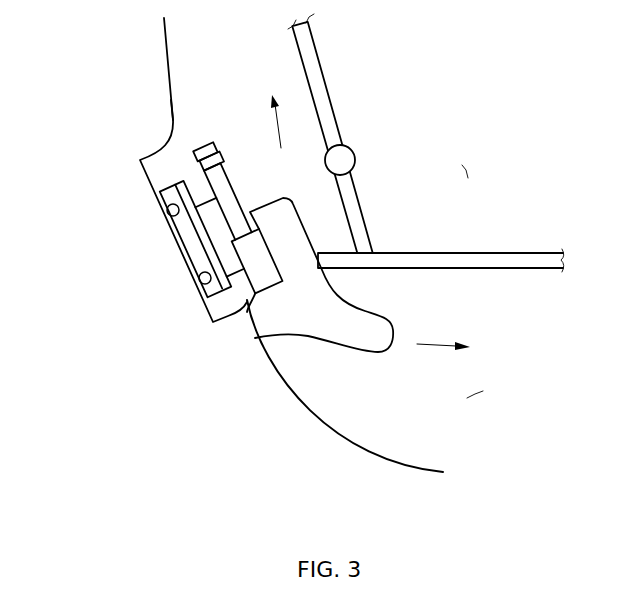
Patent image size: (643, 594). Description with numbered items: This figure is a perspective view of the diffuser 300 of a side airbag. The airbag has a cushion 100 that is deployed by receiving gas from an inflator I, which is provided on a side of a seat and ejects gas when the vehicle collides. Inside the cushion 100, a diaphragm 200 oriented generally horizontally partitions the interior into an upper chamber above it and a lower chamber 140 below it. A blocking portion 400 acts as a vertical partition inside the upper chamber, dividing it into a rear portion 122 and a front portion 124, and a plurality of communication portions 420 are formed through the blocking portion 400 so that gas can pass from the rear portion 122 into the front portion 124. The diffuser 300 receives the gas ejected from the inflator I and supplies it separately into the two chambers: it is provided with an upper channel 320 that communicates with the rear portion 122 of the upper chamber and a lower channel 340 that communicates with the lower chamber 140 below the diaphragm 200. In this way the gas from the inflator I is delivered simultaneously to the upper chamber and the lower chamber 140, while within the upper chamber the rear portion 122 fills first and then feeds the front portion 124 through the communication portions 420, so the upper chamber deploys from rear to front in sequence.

The cushion 100 is at (156, 60).
The rear portion 122 is at (223, 86).
The front portion 124 is at (466, 170).
The upper channel 320 is at (265, 210).
The inflator I is at (238, 208).
The diffuser 300 is at (285, 316).
The lower channel 340 is at (393, 340).
The lower chamber 140 is at (473, 395).
The diaphragm 200 is at (535, 265).
The blocking portion 400 is at (325, 63).
The communication portions 420 is at (355, 156).